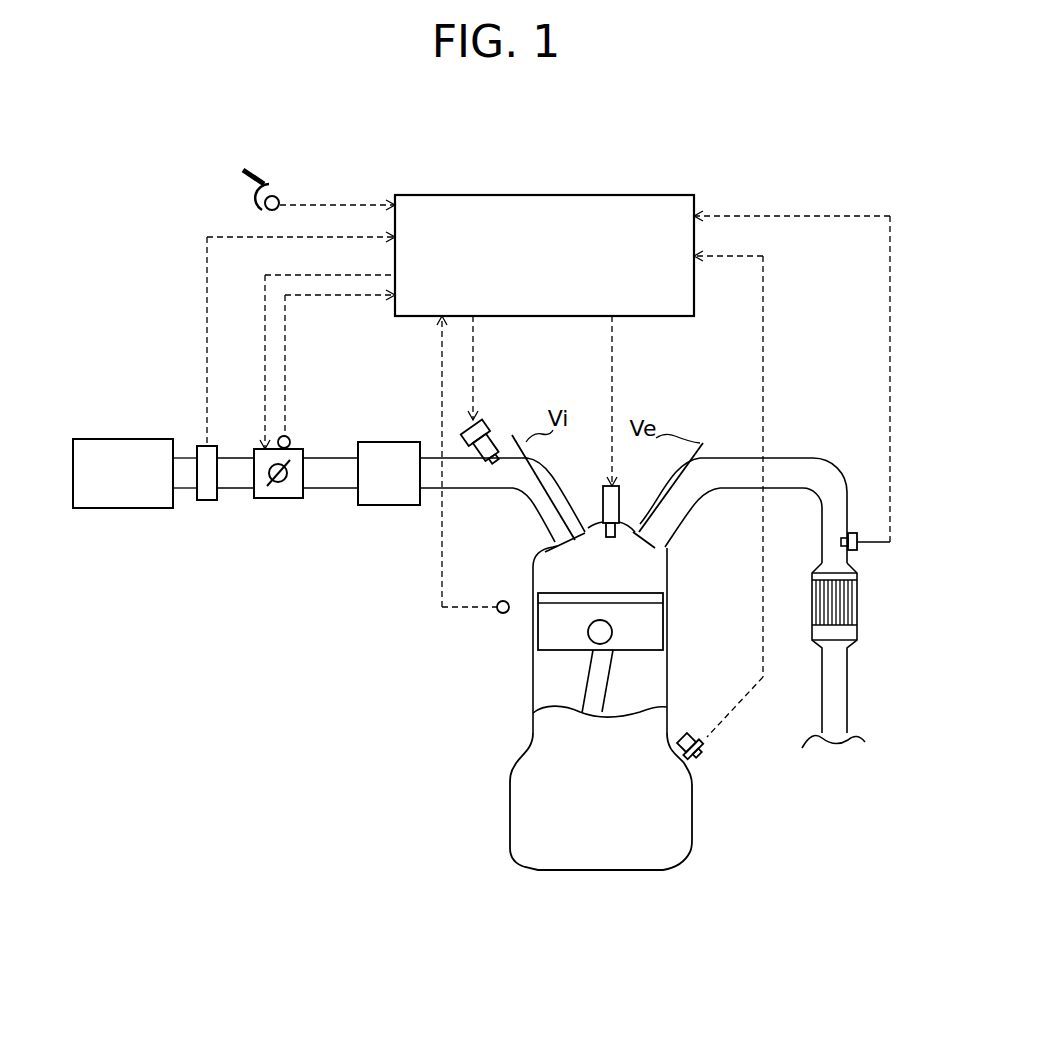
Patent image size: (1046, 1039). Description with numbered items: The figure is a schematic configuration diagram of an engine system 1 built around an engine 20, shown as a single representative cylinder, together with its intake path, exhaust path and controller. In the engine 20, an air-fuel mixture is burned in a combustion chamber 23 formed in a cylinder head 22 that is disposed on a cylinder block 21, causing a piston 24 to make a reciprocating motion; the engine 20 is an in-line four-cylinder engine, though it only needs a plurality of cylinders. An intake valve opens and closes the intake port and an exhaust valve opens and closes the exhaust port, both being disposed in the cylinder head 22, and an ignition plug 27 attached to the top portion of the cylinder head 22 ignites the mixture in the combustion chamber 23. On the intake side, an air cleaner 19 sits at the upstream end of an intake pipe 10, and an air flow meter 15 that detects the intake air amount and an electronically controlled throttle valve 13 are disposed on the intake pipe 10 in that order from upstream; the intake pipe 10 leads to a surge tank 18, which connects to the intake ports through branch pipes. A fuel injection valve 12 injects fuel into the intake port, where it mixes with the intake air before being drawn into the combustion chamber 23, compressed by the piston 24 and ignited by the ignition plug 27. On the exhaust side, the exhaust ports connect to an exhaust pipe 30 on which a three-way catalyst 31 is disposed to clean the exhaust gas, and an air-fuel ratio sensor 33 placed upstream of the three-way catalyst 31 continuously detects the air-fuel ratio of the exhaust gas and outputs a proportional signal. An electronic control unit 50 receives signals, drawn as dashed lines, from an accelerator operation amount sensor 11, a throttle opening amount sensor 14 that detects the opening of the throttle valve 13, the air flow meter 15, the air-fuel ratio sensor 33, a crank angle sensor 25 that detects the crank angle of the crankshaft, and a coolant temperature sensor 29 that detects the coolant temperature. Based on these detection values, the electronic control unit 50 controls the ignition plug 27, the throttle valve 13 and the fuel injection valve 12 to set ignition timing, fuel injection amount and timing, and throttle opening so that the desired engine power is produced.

The engine system 1 is at (896, 192).
The intake pipe 10 is at (345, 457).
The accelerator operation amount sensor 11 is at (278, 199).
The fuel injection valve 12 is at (491, 431).
The throttle valve 13 is at (290, 498).
The throttle opening amount sensor 14 is at (289, 437).
The air flow meter 15 is at (207, 500).
The surge tank 18 is at (378, 442).
The air cleaner 19 is at (120, 439).
The engine 20 is at (497, 707).
The cylinder block 21 is at (535, 767).
The cylinder head 22 is at (667, 553).
The combustion chamber 23 is at (640, 572).
The piston 24 is at (655, 642).
The crank angle sensor 25 is at (703, 755).
The ignition plug 27 is at (619, 497).
The coolant temperature sensor 29 is at (503, 613).
The exhaust pipe 30 is at (788, 459).
The three-way catalyst 31 is at (857, 600).
The air-fuel ratio sensor 33 is at (857, 531).
The electronic control unit (ECU) 50 is at (694, 196).